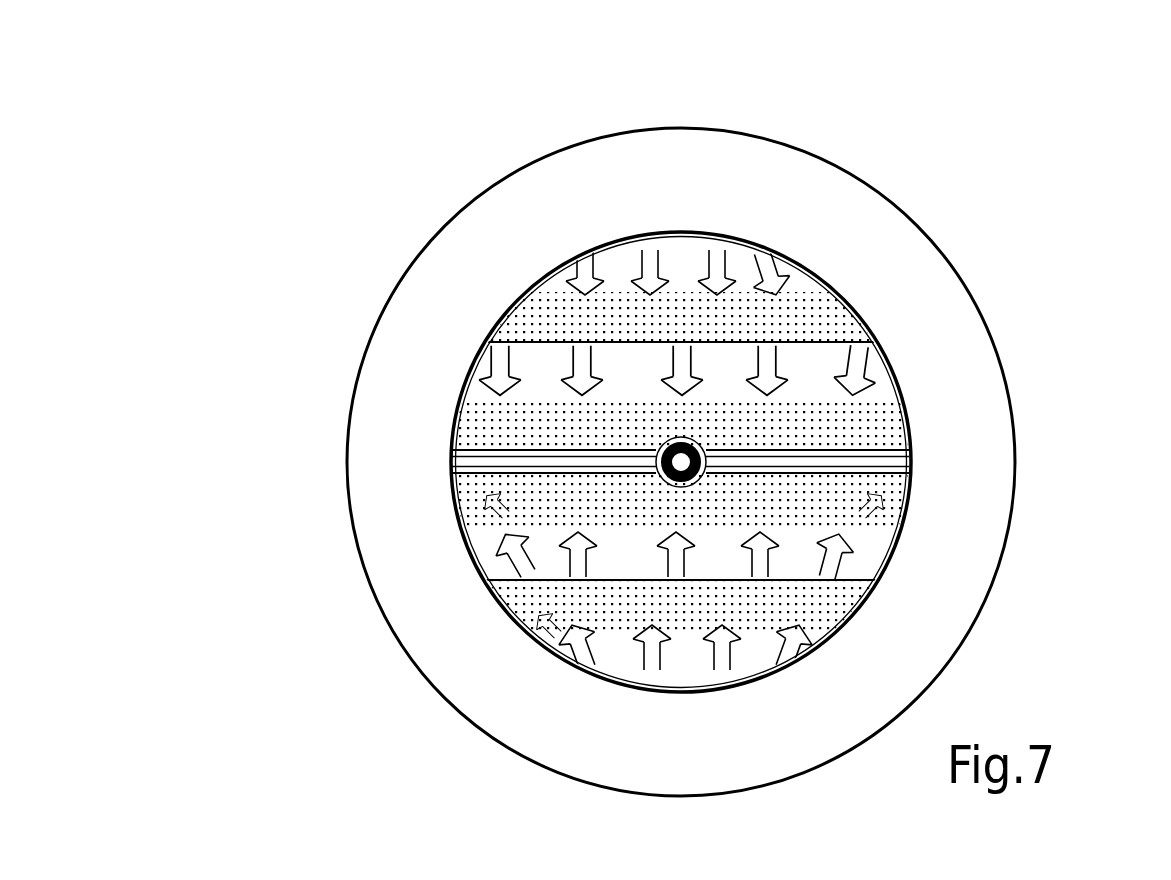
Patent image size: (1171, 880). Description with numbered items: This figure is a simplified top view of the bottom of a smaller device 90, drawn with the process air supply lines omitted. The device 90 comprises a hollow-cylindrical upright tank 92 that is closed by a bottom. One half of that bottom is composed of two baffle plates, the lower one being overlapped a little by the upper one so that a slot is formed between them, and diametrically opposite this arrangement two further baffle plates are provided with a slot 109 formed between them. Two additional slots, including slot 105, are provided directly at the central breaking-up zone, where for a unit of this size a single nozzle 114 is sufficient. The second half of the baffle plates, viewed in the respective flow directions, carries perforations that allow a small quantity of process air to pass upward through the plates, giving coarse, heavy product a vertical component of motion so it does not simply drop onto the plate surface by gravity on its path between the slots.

The device 90 is at (972, 153).
The hollow-cylindrical upright tank 92 is at (613, 241).
The slot 105 is at (857, 447).
The slot 109 is at (909, 468).
The nozzle 114 is at (657, 480).